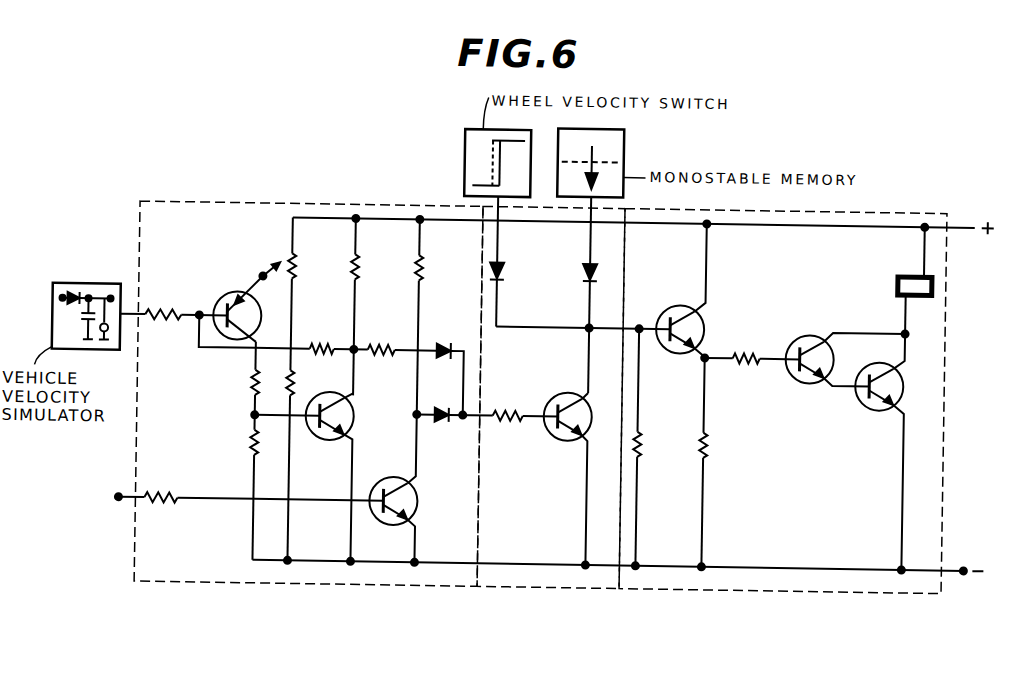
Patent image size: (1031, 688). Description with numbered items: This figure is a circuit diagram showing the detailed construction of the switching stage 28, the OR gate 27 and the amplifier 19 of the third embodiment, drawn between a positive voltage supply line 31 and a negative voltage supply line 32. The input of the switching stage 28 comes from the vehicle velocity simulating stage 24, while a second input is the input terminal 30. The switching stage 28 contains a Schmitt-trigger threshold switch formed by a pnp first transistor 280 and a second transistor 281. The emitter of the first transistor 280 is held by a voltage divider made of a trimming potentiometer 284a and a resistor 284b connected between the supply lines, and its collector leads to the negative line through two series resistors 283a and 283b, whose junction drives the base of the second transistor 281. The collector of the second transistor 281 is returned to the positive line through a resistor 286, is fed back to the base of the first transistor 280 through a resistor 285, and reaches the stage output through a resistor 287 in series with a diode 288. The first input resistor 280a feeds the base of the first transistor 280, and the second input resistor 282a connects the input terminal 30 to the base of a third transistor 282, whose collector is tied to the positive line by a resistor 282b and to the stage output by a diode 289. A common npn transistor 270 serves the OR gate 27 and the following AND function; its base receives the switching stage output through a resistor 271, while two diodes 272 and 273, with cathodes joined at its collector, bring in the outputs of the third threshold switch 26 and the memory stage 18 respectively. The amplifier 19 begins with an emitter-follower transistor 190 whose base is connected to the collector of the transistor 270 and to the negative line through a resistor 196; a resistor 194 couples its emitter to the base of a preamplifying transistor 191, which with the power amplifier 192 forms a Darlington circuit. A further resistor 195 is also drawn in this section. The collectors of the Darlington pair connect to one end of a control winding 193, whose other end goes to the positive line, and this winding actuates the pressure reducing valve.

The memory stage 18 is at (621, 144).
The amplifier 19 is at (774, 586).
The vehicle velocity simulating stage 24 is at (82, 290).
The third threshold switch 26 is at (461, 153).
The OR gate 27 is at (534, 586).
The switching stage 28 is at (316, 584).
The input terminal 30 is at (118, 500).
The positive voltage supply line 31 is at (952, 218).
The negative voltage supply line 32 is at (966, 565).
The npn transistor 190 is at (702, 318).
The preamplifying transistor 191 is at (804, 380).
The power amplifier 192 is at (874, 408).
The control winding 193 is at (900, 268).
The resistor 194 is at (748, 360).
The resistor 195 is at (712, 442).
The resistor 196 is at (645, 450).
The npn transistor 270 is at (560, 440).
The resistor 271 is at (510, 410).
The first diode 272 is at (503, 278).
The second diode 273 is at (582, 266).
The first transistor 280 is at (228, 298).
The first input resistor 280a is at (171, 306).
The second transistor 281 is at (334, 444).
The third transistor 282 is at (420, 512).
The second input resistor 282a is at (167, 510).
The resistor 282b is at (424, 268).
The resistor 283a is at (248, 377).
The resistor 283b is at (248, 440).
The trimming potentiometer 284a is at (296, 268).
The resistor 284b is at (293, 382).
The resistor 285 is at (320, 344).
The resistor 286 is at (362, 268).
The resistor 287 is at (382, 344).
The diode 288 is at (445, 344).
The diode 289 is at (442, 423).